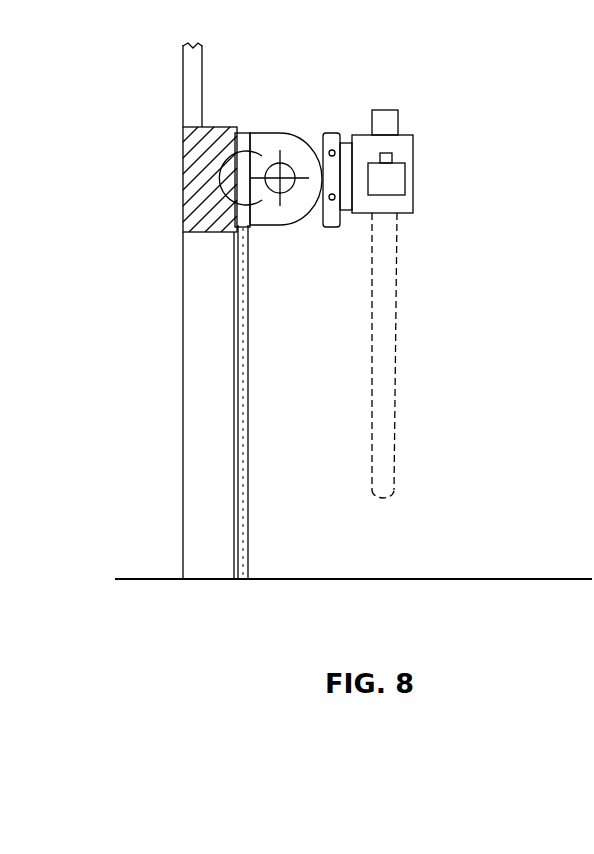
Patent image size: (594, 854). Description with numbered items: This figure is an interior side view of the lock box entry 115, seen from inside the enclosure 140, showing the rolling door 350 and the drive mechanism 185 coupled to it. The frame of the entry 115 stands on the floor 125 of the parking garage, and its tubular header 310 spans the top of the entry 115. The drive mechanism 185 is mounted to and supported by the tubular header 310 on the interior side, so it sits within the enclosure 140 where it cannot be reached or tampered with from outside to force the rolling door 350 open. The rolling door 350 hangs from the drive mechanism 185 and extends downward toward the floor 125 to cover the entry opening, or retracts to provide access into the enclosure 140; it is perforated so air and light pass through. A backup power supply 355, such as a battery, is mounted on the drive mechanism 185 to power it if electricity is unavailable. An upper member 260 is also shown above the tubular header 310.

The entry 115 is at (156, 363).
The floor 125 is at (490, 578).
The enclosure 140 is at (516, 355).
The drive mechanism 185 is at (268, 133).
The upper post section 260 is at (186, 92).
The tubular header 310 is at (190, 187).
The rolling door 350 is at (247, 543).
The backup power supply 355 is at (390, 110).